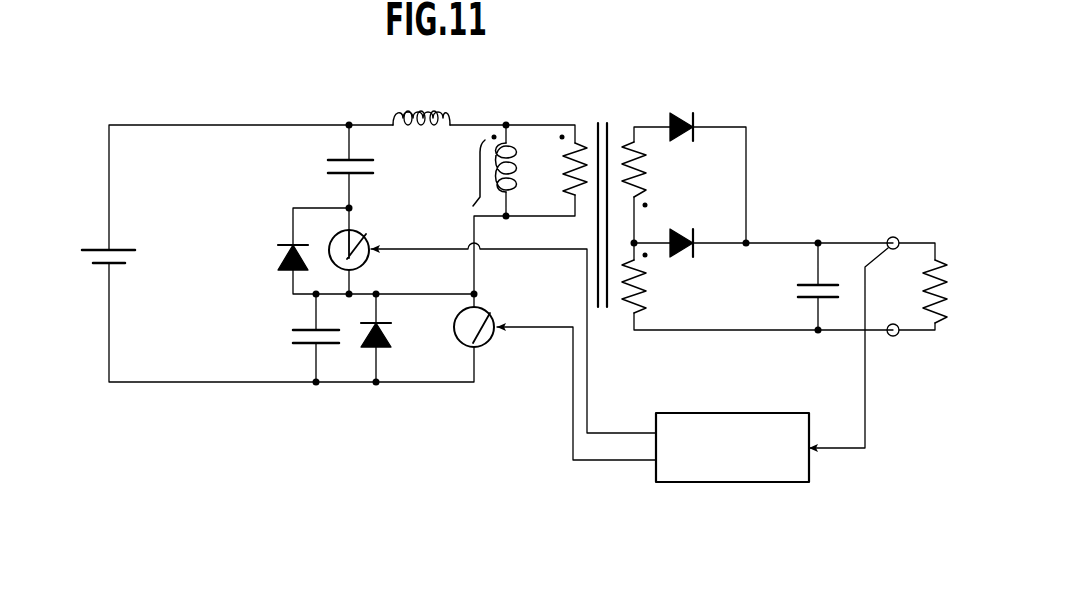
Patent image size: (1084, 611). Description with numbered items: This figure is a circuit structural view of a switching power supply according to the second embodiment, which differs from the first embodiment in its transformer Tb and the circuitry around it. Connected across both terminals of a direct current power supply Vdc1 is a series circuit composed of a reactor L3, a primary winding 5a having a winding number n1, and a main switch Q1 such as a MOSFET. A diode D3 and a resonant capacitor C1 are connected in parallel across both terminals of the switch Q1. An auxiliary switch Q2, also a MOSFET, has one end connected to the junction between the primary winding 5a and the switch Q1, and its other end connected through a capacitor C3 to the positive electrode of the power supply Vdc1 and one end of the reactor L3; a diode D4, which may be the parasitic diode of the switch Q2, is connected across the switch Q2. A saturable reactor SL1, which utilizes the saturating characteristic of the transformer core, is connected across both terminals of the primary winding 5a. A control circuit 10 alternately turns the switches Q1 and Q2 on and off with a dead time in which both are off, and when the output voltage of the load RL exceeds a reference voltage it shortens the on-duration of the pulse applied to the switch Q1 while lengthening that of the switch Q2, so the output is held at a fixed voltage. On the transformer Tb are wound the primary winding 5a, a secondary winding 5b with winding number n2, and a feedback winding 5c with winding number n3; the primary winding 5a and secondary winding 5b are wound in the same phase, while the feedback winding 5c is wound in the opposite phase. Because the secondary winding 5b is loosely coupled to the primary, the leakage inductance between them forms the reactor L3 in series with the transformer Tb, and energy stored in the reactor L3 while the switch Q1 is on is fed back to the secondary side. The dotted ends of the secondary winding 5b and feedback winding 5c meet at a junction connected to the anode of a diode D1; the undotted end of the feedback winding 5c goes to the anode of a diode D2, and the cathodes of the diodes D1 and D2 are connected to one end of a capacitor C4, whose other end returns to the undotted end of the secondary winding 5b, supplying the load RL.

The direct current power supply Vdc1 is at (81, 258).
The capacitor C3 is at (335, 170).
The reactor L3 is at (421, 103).
The saturable reactor SL1 is at (476, 173).
The winding number of primary winding n1 is at (561, 169).
The primary winding 5a is at (557, 145).
The transformer Tb is at (604, 203).
The winding number of feedback winding n3 is at (653, 169).
The feedback winding 5c is at (648, 148).
The winding number of secondary winding n2 is at (653, 286).
The secondary winding 5b is at (650, 298).
The diode D2 is at (685, 114).
The diode D1 is at (685, 230).
The capacitor C4 is at (800, 296).
The load RL is at (917, 286).
The switch (auxiliary switch) Q2 is at (357, 241).
The diode D4 is at (275, 261).
The resonant capacitor C1 is at (298, 335).
The diode D3 is at (394, 335).
The switch (main switch) Q1 is at (482, 339).
The control circuit 10 is at (732, 483).